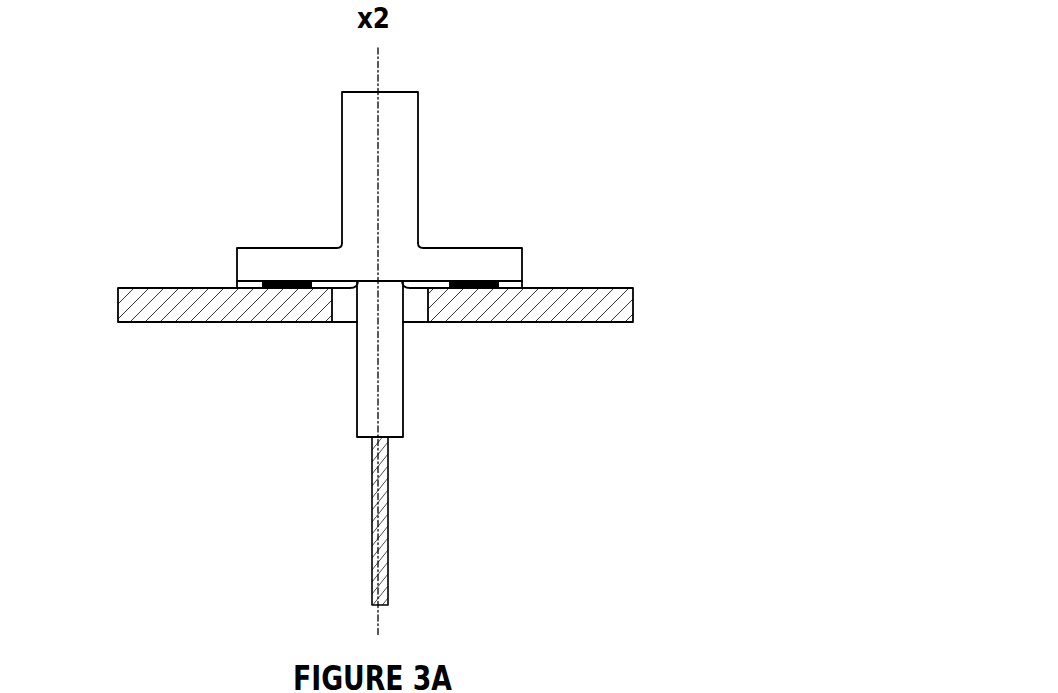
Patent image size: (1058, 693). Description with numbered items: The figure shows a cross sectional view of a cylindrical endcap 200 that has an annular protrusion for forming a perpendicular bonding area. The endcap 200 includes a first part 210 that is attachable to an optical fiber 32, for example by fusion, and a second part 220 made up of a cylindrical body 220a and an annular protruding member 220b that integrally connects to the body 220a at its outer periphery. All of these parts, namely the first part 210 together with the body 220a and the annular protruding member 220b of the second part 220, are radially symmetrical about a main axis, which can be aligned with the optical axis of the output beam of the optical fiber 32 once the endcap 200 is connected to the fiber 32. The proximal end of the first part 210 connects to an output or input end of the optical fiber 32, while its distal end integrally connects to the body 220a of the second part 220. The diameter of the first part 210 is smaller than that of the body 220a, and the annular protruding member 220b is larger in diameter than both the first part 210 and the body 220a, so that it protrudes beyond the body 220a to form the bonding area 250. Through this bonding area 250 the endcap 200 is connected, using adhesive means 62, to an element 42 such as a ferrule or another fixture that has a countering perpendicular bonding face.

The cylindrical endcap 200 is at (350, 322).
The second part 220 is at (309, 154).
The cylindrical body 220a is at (343, 178).
The annular protruding member 220b is at (260, 247).
The bonding area 250 is at (352, 275).
The element 42 is at (626, 308).
The adhesive means 62 is at (485, 288).
The first part 210 is at (398, 410).
The optical fiber 32 is at (388, 543).